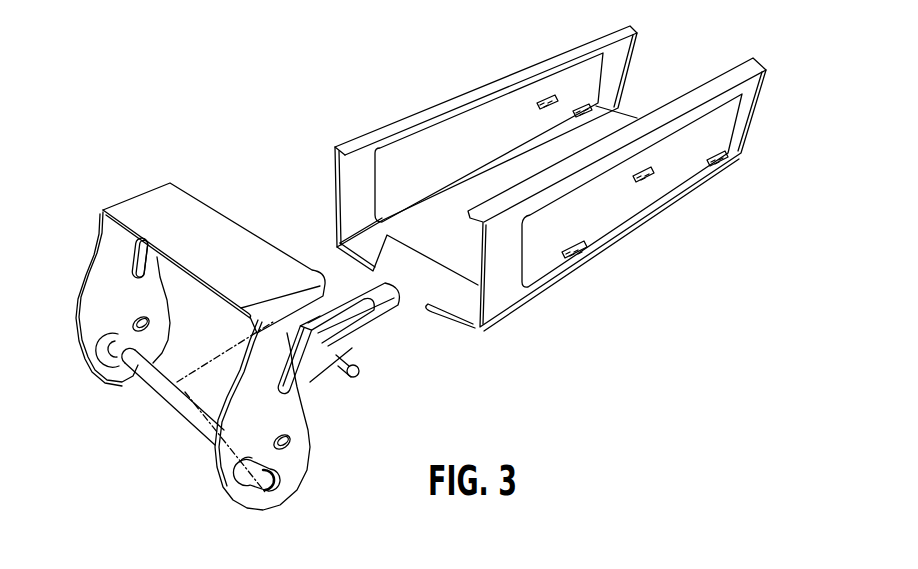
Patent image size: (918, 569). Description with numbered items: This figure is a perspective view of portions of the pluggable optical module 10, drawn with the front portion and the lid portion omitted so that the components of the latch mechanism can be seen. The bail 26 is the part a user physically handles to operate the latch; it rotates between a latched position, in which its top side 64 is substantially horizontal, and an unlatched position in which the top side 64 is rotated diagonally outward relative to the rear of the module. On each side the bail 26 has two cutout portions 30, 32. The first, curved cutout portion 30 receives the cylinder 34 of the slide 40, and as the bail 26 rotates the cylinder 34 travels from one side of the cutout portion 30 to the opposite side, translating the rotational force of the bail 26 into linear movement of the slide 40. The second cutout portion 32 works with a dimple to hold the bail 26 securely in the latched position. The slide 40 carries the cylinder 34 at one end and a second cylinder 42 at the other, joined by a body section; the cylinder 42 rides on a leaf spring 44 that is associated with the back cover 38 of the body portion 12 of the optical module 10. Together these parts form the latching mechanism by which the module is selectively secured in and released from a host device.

The optical module 10 is at (286, 64).
The body portion 12 is at (473, 88).
The bail 26 is at (149, 195).
The cutout portion 30 is at (250, 488).
The cutout portion 32 is at (298, 393).
The cylinder 34 is at (178, 397).
The back cover 38 is at (613, 203).
The slide 40 is at (318, 382).
The cylinder 42 is at (358, 375).
The leaf spring 44 is at (375, 338).
The top side 64 is at (233, 240).